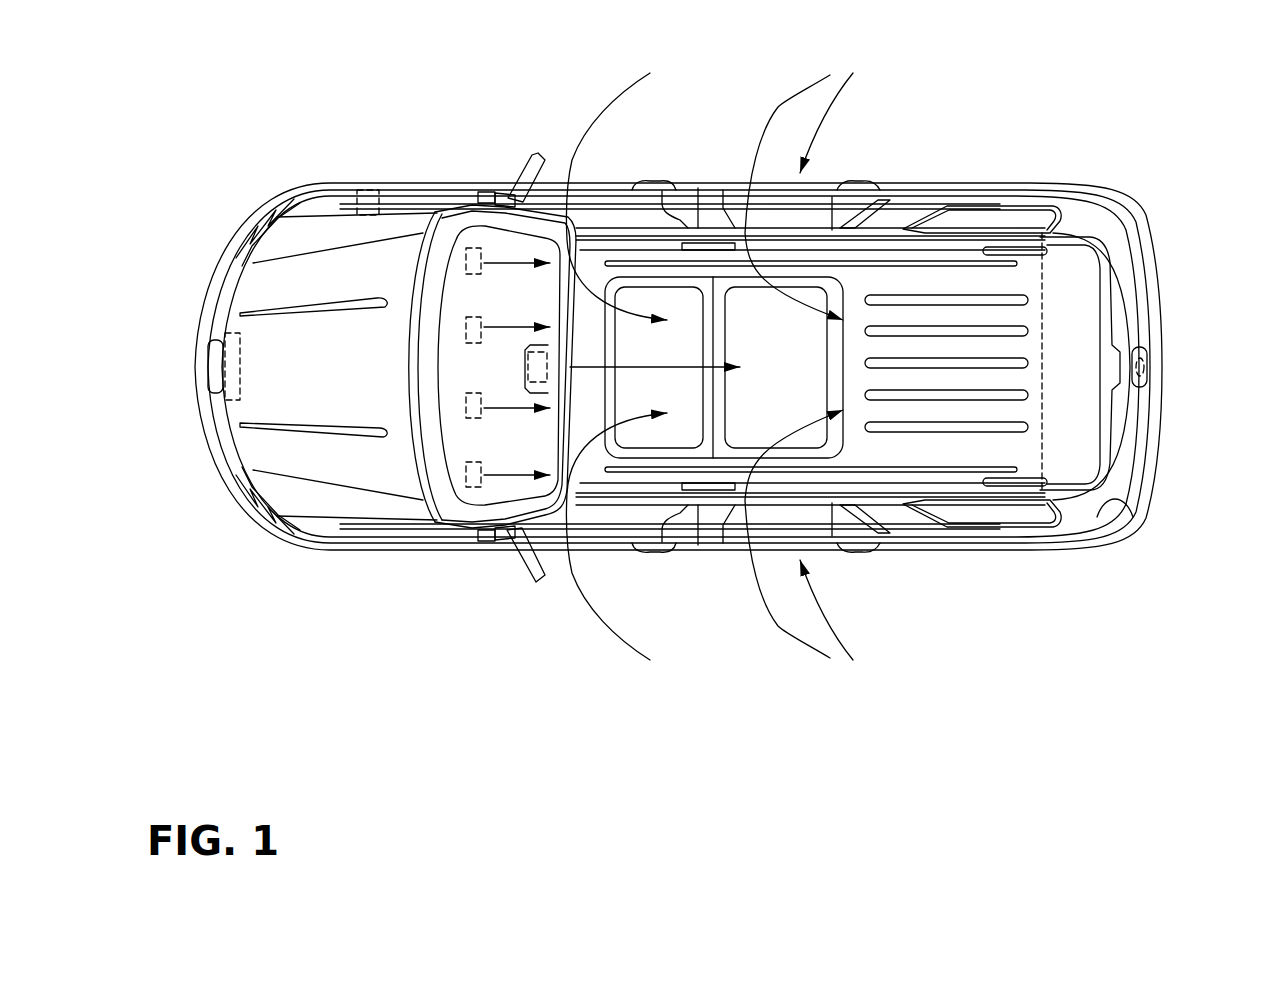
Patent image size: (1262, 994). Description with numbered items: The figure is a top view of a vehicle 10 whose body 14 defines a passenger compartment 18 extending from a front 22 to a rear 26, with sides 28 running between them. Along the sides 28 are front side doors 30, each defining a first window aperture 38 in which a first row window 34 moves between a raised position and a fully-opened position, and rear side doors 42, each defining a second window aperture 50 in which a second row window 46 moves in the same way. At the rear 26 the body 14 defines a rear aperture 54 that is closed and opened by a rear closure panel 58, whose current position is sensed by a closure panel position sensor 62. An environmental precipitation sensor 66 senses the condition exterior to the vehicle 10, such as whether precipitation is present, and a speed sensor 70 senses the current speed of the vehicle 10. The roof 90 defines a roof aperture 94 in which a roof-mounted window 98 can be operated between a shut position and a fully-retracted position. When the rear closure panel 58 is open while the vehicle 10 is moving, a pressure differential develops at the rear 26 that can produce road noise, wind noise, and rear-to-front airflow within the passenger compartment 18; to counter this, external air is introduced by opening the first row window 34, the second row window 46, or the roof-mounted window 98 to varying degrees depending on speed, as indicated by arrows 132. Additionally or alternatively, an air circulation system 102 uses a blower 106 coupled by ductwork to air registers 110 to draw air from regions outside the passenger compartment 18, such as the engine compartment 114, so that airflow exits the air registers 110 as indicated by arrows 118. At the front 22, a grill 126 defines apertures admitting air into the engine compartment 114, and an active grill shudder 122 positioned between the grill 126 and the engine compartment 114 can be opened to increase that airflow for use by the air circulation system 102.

The vehicle 10 is at (192, 144).
The body 14 is at (452, 183).
The passenger compartment 18 is at (958, 225).
The front 22 is at (200, 327).
The rear 26 is at (1160, 253).
The sides 28 is at (923, 183).
The front side doors 30 is at (553, 180).
The first row window 34 is at (612, 213).
The first window aperture 38 is at (662, 213).
The rear side doors 42 is at (812, 215).
The second row window 46 is at (835, 207).
The second window aperture 50 is at (723, 213).
The rear aperture 54 is at (1133, 517).
The rear closure panel 58 is at (1108, 240).
The closure panel position sensor 62 is at (1148, 362).
The environmental precipitation sensor 66 is at (400, 355).
The speed sensor 70 is at (362, 182).
The roof 90 is at (1026, 268).
The roof aperture 94 is at (727, 553).
The roof-mounted window 98 is at (547, 480).
The air circulation system 102 is at (403, 383).
The blower 106 is at (407, 358).
The air registers 110 is at (460, 310).
The engine compartment 114 is at (300, 282).
The arrows 118 is at (510, 325).
The active grill shudder 122 is at (237, 365).
The grill 126 is at (223, 296).
The arrows 132 is at (585, 130).